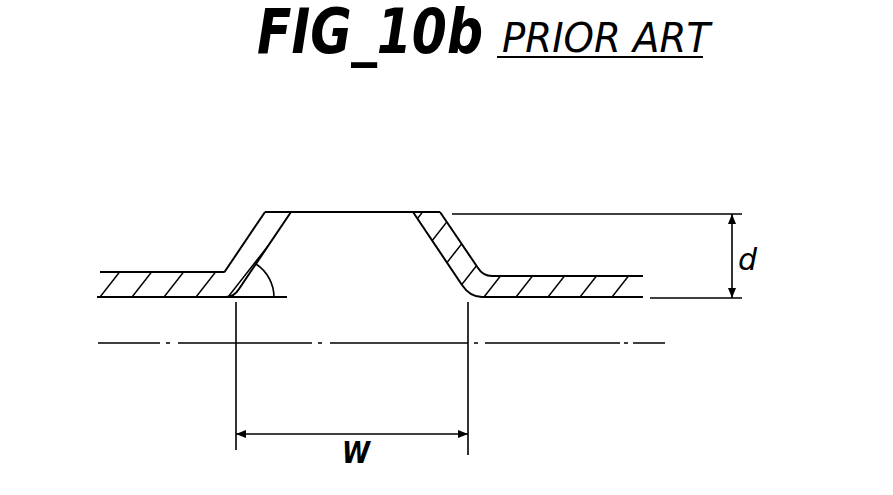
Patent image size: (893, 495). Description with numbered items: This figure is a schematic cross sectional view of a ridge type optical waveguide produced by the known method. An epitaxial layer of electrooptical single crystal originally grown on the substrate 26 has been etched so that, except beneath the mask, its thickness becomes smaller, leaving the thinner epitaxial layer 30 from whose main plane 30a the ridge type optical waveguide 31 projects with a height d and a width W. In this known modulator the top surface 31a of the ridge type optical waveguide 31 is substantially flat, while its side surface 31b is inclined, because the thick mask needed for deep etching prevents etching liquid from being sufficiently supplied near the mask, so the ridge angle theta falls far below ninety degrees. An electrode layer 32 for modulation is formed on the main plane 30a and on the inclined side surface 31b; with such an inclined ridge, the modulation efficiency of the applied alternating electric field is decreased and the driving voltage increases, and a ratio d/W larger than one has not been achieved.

The substrate 26 is at (655, 407).
The epitaxial layer 30 is at (668, 323).
The main plane of the epitaxial layer 30a is at (573, 297).
The ridge type optical waveguide 31 is at (404, 190).
The surface of the ridge type optical waveguide 31a is at (317, 201).
The side surface 31b is at (455, 235).
The electrode layer 32 is at (227, 277).